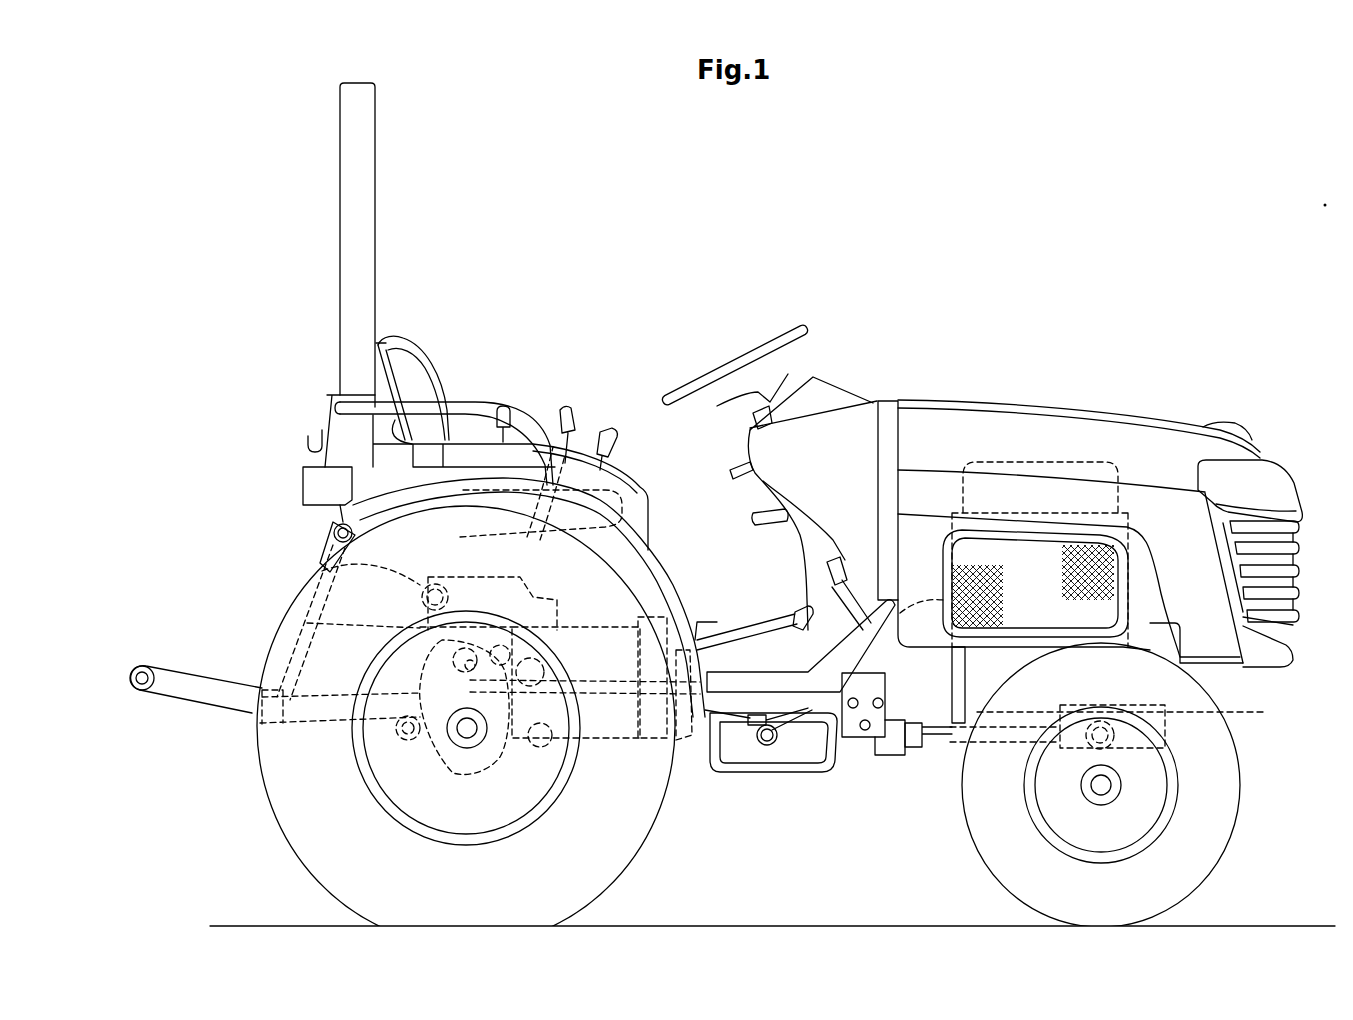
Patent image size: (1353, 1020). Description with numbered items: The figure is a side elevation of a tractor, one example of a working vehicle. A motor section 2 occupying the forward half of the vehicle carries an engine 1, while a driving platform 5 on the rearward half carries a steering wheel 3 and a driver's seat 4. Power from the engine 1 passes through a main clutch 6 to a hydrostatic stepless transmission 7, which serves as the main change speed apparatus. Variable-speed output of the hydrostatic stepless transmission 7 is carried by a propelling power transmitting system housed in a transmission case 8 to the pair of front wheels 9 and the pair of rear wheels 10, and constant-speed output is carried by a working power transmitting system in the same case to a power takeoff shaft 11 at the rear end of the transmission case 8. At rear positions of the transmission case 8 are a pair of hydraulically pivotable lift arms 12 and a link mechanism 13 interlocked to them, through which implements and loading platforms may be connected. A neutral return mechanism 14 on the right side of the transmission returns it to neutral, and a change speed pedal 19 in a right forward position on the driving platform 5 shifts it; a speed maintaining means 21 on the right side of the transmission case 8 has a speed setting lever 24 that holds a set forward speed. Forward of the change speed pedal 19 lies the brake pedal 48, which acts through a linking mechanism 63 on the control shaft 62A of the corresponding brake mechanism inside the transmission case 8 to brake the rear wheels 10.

The engine 1 is at (1047, 462).
The motor section 2 is at (1141, 377).
The steering wheel 3 is at (737, 362).
The driver's seat 4 is at (432, 372).
The driving platform 5 is at (618, 313).
The main clutch 6 is at (930, 728).
The hydrostatic stepless transmission 7 is at (688, 742).
The transmission case 8 is at (605, 738).
The front wheels 9 is at (1217, 850).
The rear wheels 10 is at (287, 843).
The power takeoff shaft 11 is at (395, 688).
The lift arms 12 is at (322, 568).
The link mechanism 13 is at (210, 662).
The neutral return mechanism 14 is at (648, 657).
The change speed pedal 19 is at (762, 628).
The speed maintaining means 21 is at (540, 738).
The speed setting lever 24 is at (568, 408).
The right brake pedal 48 is at (838, 572).
The control shaft 62A is at (455, 577).
The linking mechanism 63 is at (748, 726).